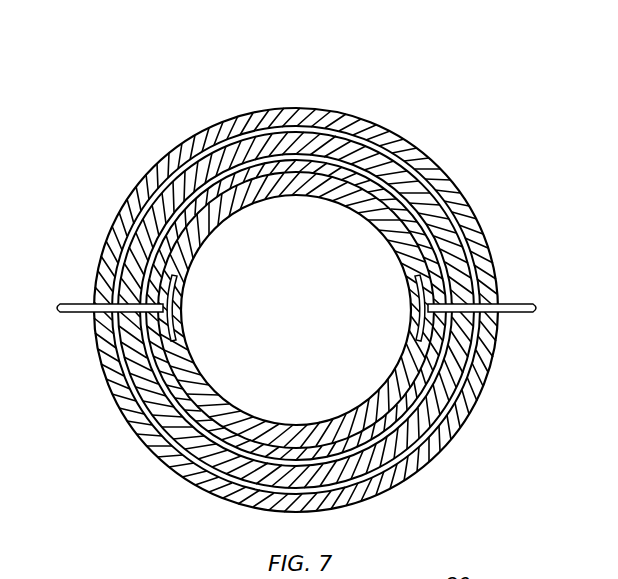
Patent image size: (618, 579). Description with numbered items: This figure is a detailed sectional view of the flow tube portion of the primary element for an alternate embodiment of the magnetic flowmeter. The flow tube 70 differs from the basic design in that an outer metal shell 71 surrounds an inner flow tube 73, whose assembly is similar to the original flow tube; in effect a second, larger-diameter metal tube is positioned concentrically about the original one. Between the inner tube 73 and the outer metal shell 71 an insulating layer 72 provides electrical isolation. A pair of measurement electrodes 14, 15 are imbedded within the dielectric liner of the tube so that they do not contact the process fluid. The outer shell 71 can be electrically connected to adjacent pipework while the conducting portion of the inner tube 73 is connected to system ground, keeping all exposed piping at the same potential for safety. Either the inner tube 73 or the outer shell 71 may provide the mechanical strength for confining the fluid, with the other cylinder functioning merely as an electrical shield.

The flow tube 70 is at (386, 86).
The outer metal shell 71 is at (426, 162).
The insulating layer 72 is at (454, 230).
The inner flow tube 73 is at (437, 406).
The measurement electrode 14 is at (97, 292).
The measurement electrode 15 is at (502, 291).